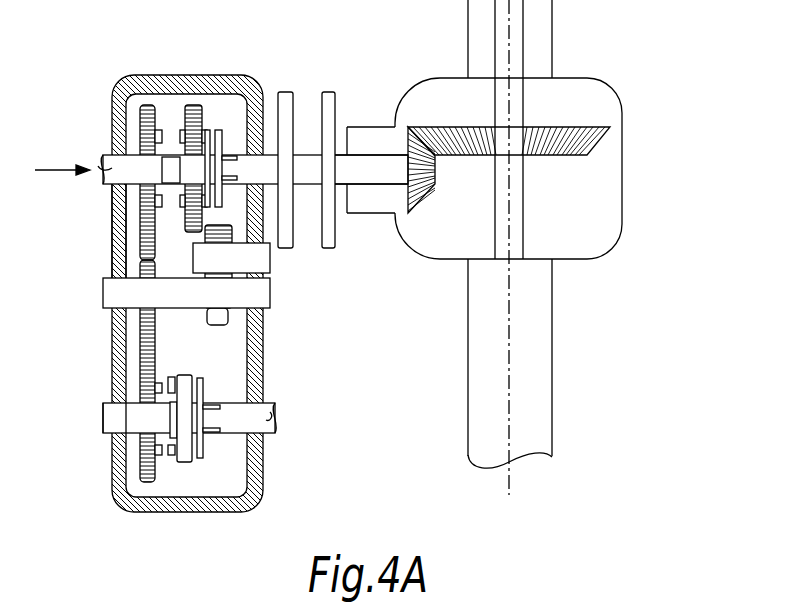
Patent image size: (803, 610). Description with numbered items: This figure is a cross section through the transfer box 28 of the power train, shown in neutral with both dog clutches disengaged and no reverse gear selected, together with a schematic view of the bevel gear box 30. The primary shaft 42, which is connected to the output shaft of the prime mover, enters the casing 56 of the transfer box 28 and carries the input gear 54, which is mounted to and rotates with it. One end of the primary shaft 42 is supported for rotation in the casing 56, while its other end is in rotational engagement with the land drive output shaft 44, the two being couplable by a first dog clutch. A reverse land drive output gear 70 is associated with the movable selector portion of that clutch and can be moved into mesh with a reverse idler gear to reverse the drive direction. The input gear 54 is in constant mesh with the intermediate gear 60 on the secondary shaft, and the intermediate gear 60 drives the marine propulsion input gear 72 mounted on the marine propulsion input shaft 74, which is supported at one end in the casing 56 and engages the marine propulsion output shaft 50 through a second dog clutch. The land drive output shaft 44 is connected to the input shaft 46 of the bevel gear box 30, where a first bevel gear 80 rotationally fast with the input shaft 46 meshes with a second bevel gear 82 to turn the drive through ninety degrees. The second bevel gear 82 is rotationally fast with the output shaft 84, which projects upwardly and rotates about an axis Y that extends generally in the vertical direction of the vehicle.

The transfer box 28 is at (265, 478).
The bevel gear box 30 is at (620, 232).
The primary shaft 42 is at (102, 157).
The land drive output shaft 44 is at (253, 160).
The input shaft of the bevel gear box 46 is at (372, 167).
The marine propulsion output shaft 50 is at (258, 422).
The input gear 54 is at (145, 212).
The casing 56 is at (120, 260).
The intermediate gear 60 is at (145, 335).
The reverse land drive output gear 70 is at (188, 114).
The marine propulsion input gear 72 is at (140, 465).
The marine propulsion input shaft 74 is at (118, 418).
The first bevel gear 80 is at (428, 193).
The second bevel gear 82 is at (598, 138).
The output shaft of the bevel gear box 84 is at (516, 109).
The axis of rotation Y is at (512, 430).